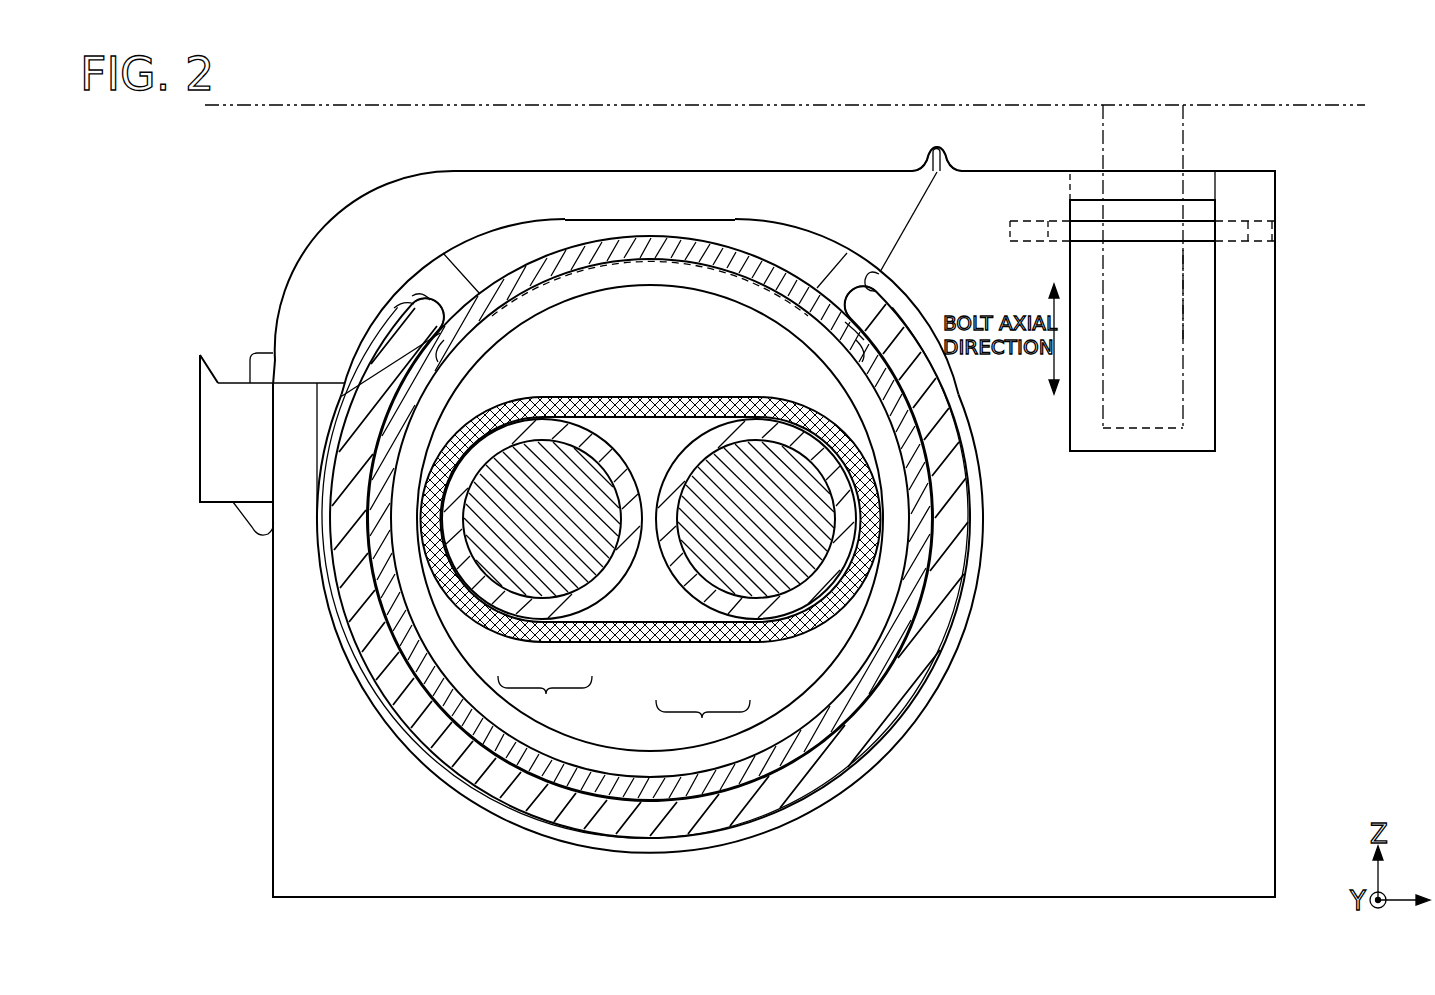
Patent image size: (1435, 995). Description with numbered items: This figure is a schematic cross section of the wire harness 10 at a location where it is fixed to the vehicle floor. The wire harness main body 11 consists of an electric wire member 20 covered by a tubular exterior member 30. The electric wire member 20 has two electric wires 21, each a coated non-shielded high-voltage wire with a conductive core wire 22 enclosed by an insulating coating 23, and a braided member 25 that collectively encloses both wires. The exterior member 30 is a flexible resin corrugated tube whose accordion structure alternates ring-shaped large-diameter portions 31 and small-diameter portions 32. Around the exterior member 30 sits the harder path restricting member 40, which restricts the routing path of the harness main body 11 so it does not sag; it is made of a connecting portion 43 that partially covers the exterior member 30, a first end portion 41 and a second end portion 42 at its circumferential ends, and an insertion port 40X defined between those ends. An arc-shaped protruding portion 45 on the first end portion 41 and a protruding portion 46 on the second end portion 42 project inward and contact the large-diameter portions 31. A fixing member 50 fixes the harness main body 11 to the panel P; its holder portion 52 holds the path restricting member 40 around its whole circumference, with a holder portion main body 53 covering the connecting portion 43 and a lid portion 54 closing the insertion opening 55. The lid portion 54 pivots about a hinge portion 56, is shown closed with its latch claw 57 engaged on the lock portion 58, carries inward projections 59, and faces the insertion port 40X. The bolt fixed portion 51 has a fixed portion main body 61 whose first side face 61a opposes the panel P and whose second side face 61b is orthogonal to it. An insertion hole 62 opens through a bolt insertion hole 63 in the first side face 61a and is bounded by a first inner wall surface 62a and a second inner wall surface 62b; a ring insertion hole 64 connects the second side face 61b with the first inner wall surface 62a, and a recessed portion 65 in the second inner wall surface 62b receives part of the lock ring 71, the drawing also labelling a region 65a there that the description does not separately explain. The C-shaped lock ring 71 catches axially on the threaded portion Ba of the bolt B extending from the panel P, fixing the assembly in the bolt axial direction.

The wire harness 10 is at (282, 283).
The wire harness main body 11 is at (406, 670).
The electric wire member 20 is at (651, 571).
The electric wire 21 is at (649, 571).
The core wire 22 is at (540, 596).
The insulating coating 23 is at (572, 620).
The braided member 25 is at (676, 640).
The exterior member 30 is at (650, 490).
The large-diameter portion 31 is at (705, 249).
The small-diameter portion 32 is at (647, 290).
The path restricting member 40 is at (650, 583).
The insertion port 40X is at (426, 298).
The first end portion 41 is at (404, 318).
The second end portion 42 is at (888, 314).
The connecting portion 43 is at (778, 800).
The protruding portion 45 is at (447, 343).
The protruding portion 46 is at (846, 344).
The fixing member 50 is at (1045, 898).
The bolt fixed portion 51 is at (1276, 184).
The holder portion 52 is at (576, 898).
The holder portion main body 53 is at (482, 856).
The lid portion 54 is at (596, 180).
The insertion opening 55 is at (876, 268).
The hinge portion 56 is at (928, 152).
The latch claw 57 is at (260, 536).
The lock portion 58 is at (232, 486).
The projection 59 is at (527, 227).
The fixed portion main body 61 is at (1270, 275).
The first side face 61a is at (1045, 172).
The second side face 61b is at (1277, 432).
The insertion hole 62 is at (1090, 453).
The first inner wall surface 62a is at (1205, 408).
The second inner wall surface 62b is at (1076, 410).
The bolt insertion hole 63 is at (1216, 196).
The ring insertion hole 64 is at (1264, 243).
The recessed portion 65 is at (1037, 248).
The nut flange 65a is at (1012, 228).
The lock ring 71 is at (1146, 244).
The panel P is at (290, 106).
The bolt B is at (1148, 432).
The threaded portion Ba is at (1185, 300).